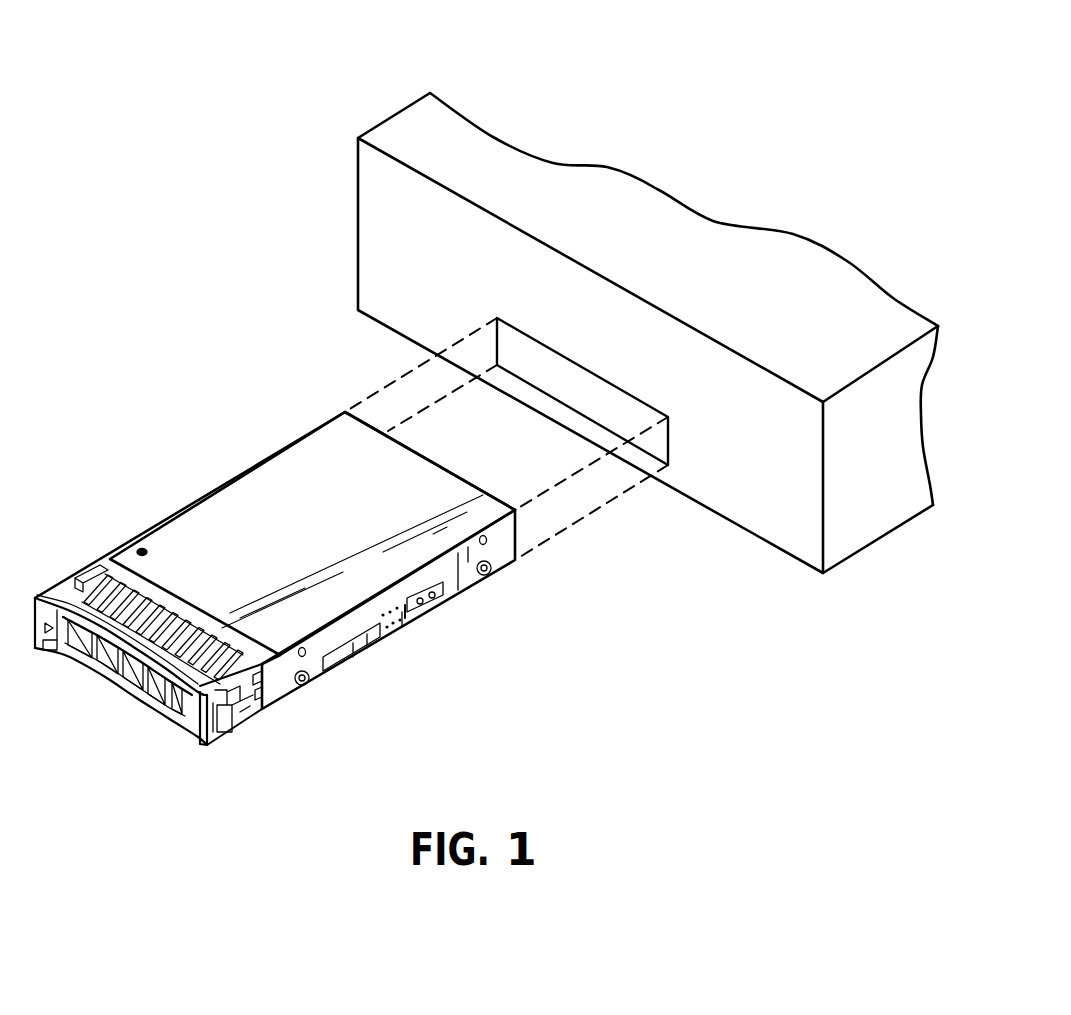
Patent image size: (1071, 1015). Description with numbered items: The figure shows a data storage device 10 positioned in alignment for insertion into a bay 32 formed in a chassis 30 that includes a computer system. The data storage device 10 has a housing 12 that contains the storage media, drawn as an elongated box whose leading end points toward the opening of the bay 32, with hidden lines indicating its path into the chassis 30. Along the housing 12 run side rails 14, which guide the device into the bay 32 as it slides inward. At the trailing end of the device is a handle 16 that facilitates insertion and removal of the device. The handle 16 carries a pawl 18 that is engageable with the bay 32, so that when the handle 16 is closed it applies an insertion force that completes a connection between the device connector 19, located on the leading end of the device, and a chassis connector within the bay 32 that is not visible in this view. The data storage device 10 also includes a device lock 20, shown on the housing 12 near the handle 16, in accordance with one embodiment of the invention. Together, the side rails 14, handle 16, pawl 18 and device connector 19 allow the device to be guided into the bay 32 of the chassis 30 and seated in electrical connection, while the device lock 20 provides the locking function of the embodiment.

The data storage device 10 is at (175, 403).
The housing 12 is at (284, 558).
The side rails 14 is at (237, 477).
The handle 16 is at (150, 693).
The pawl 18 is at (223, 722).
The device connector 19 is at (443, 467).
The device lock 20 is at (136, 548).
The chassis 30 is at (395, 112).
The bay 32 is at (597, 372).